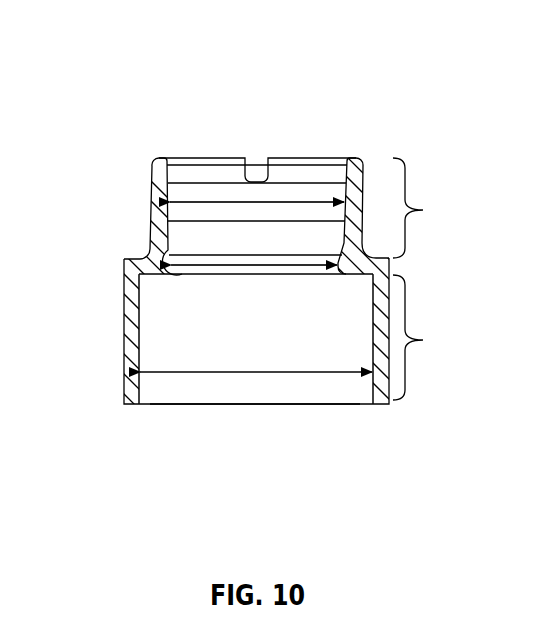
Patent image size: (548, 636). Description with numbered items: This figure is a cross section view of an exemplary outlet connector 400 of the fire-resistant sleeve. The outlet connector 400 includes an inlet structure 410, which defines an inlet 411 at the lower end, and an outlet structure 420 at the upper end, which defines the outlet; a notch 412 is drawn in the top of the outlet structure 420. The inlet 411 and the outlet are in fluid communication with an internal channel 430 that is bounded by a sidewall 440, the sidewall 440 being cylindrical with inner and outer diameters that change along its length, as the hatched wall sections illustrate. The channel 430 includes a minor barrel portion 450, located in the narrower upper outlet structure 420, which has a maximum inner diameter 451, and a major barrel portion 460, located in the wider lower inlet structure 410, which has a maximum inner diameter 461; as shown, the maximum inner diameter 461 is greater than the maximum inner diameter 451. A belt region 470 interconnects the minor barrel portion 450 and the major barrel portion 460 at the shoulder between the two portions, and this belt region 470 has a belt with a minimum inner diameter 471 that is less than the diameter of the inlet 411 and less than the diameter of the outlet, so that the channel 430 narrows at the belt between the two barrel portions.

The outlet connector 400 is at (114, 64).
The inlet structure 410 is at (121, 348).
The inlet 411 is at (178, 405).
The notch in top of upper portion 412 is at (315, 157).
The outlet structure 420 is at (149, 160).
The internal channel 430 is at (276, 338).
The sidewall 440 is at (150, 212).
The minor barrel portion 450 is at (434, 208).
The maximum inner diameter of minor barrel portion 451 is at (243, 203).
The major barrel portion 460 is at (434, 337).
The maximum inner diameter of major barrel portion 461 is at (273, 374).
The belt region 470 is at (121, 270).
The minimum inner diameter of belt 471 is at (300, 272).